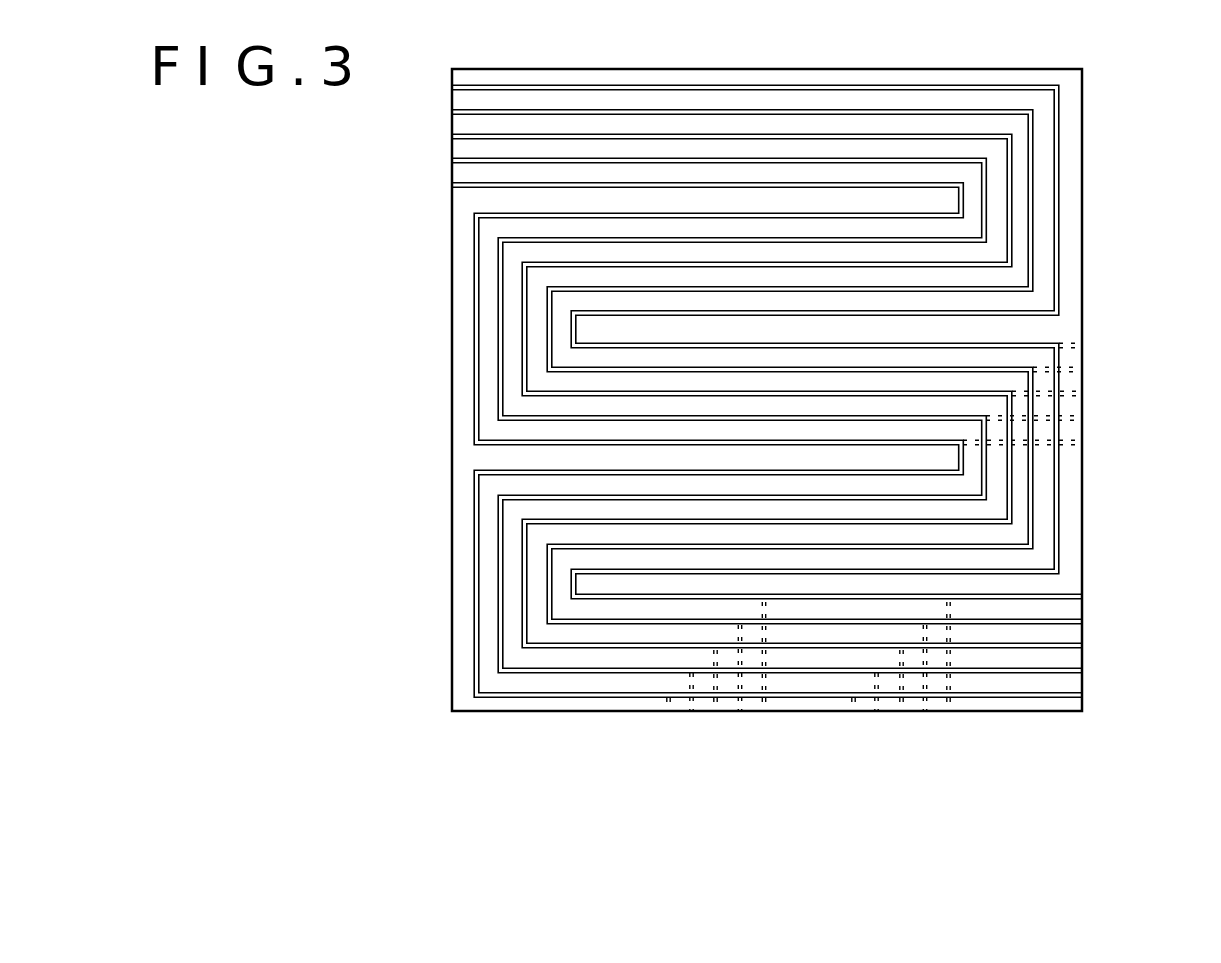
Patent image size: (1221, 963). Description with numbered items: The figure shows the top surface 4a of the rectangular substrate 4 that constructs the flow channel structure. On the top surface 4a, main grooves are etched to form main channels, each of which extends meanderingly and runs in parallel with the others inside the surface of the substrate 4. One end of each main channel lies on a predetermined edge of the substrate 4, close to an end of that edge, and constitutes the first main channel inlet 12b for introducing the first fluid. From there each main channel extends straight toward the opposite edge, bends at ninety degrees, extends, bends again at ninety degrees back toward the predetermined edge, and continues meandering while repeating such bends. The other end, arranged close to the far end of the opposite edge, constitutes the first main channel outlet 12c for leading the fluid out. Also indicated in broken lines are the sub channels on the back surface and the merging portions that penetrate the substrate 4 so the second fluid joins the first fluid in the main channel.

The substrate 4 is at (1166, 71).
The top surface 4a is at (1069, 202).
The first main channel inlet 12b is at (1082, 596).
The first main channel outlet 12c is at (452, 88).